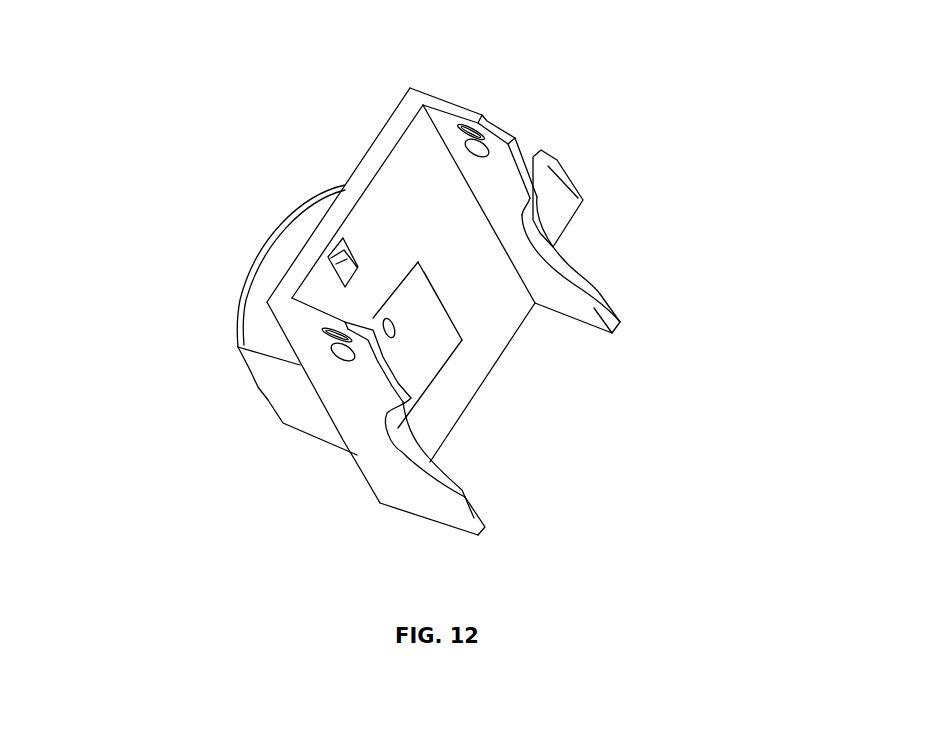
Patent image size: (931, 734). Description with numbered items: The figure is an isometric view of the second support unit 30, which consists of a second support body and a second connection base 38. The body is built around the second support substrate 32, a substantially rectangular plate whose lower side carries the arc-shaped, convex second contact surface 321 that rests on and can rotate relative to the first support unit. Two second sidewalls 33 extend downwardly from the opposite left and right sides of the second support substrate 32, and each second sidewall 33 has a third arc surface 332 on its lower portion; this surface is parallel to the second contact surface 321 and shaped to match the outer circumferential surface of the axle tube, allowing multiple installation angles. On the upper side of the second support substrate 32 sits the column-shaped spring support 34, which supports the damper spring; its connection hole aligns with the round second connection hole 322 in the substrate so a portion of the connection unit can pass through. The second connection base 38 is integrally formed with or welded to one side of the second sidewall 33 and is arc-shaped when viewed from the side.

The second support unit 30 is at (158, 213).
The second support substrate 32 is at (413, 195).
The second contact surface 321 is at (428, 332).
The second connection hole 322 is at (392, 330).
The second sidewall 33 is at (422, 495).
The third arc surface 332 is at (570, 273).
The spring support 34 is at (301, 217).
The second connection base 38 is at (567, 190).